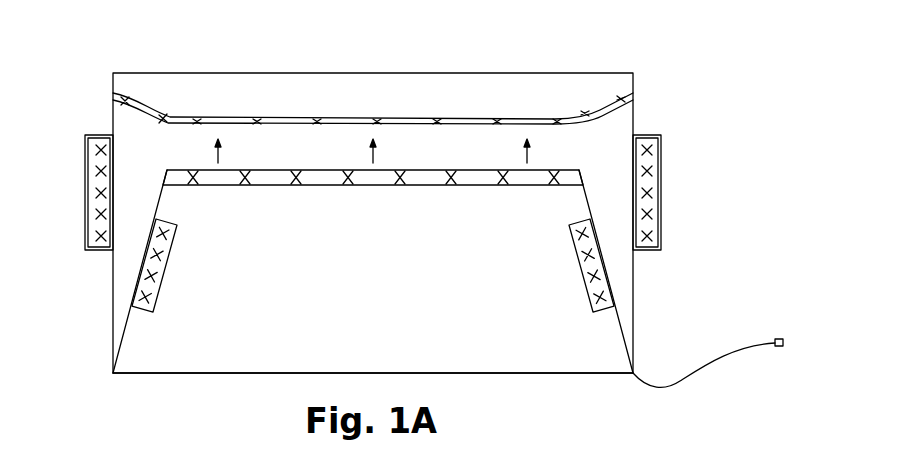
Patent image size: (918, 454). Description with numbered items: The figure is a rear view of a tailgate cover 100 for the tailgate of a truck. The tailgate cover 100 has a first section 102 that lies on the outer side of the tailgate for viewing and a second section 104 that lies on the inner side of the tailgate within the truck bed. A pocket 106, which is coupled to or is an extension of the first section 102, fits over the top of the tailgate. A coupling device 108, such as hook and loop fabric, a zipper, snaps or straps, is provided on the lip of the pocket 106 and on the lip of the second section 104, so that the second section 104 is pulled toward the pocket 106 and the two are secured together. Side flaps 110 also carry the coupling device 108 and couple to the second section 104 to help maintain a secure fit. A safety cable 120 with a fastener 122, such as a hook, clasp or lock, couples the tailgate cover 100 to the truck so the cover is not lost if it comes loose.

The tailgate cover 100 is at (720, 38).
The first section 102 is at (121, 272).
The second section 104 is at (565, 352).
The pocket 106 is at (181, 86).
The coupling device 108 is at (95, 190).
The side flaps 110 is at (100, 135).
The safety cable 120 is at (723, 358).
The fastener 122 is at (778, 338).